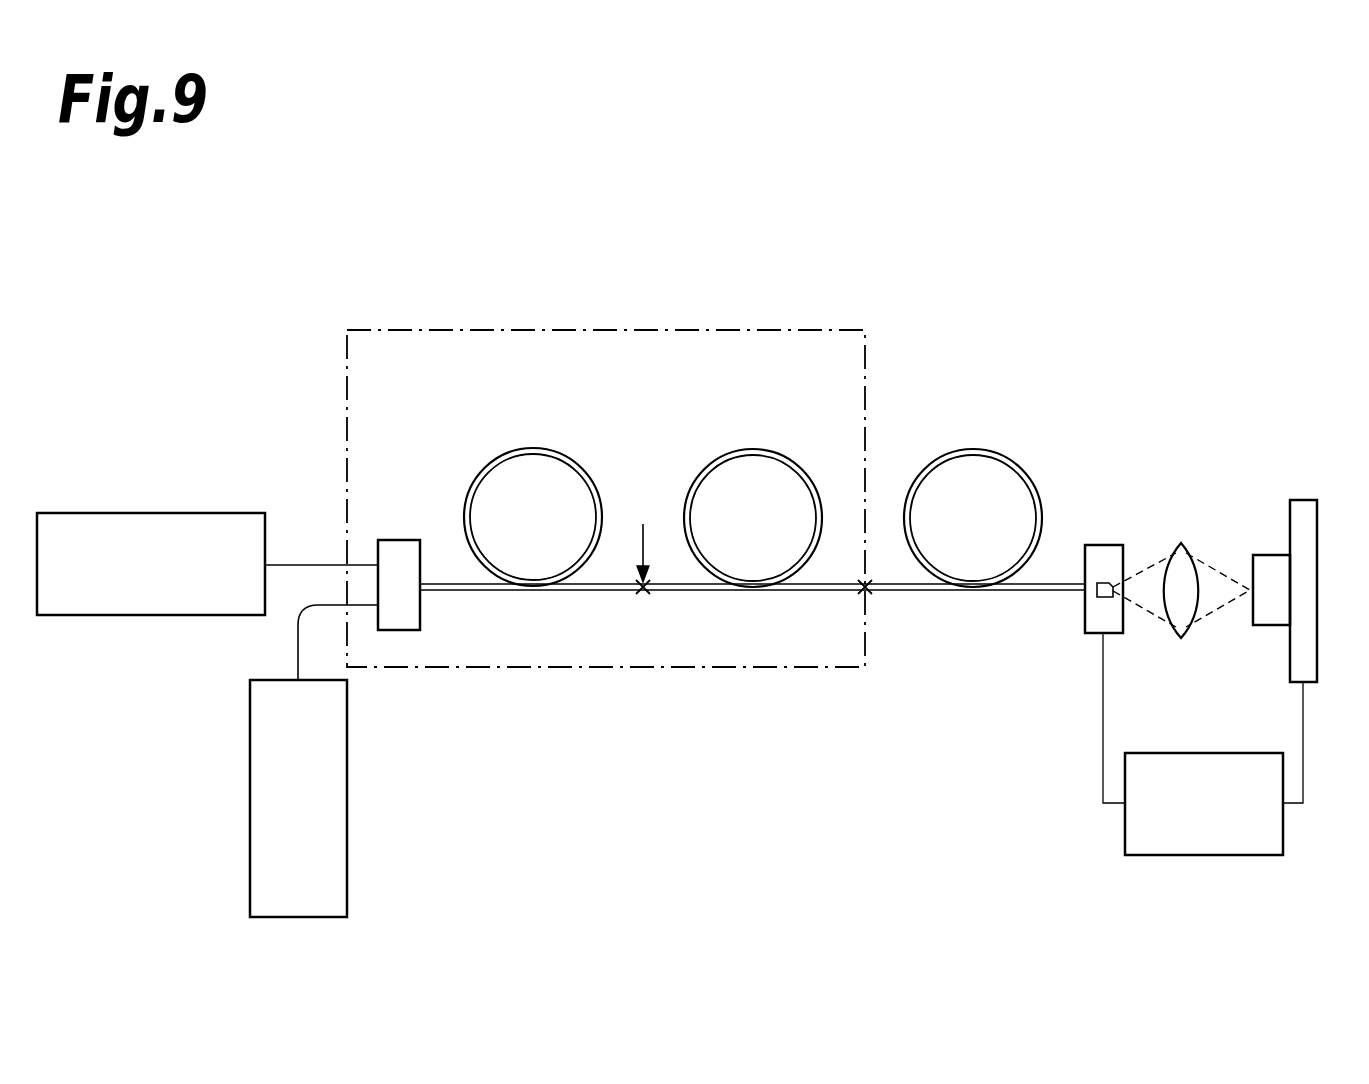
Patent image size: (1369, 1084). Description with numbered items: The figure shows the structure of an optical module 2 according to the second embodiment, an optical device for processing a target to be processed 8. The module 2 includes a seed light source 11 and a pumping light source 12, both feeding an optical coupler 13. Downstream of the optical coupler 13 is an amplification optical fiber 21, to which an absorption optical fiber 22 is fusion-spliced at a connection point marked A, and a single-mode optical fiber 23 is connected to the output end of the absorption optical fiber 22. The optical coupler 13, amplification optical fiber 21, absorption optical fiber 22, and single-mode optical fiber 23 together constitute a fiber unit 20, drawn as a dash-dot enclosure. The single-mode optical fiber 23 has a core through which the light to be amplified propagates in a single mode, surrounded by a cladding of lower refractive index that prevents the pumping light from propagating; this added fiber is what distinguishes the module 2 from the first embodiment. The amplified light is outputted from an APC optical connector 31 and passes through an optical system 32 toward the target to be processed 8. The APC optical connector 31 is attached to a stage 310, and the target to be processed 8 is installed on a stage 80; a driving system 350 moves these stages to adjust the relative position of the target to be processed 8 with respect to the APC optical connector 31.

The optical module 2 is at (958, 224).
The target to be processed 8 is at (1272, 555).
The seed light source 11 is at (92, 513).
The pumping light source 12 is at (250, 836).
The optical coupler 13 is at (403, 540).
The fiber unit 20 is at (790, 667).
The amplification optical fiber 21 is at (543, 448).
The absorption optical fiber 22 is at (760, 449).
The single-mode optical fiber 23 is at (980, 449).
The APC optical connector 31 is at (1106, 583).
The optical system 32 is at (1193, 555).
The stage 80 is at (1308, 500).
The stage 310 is at (1113, 633).
The driving system 350 is at (1230, 855).